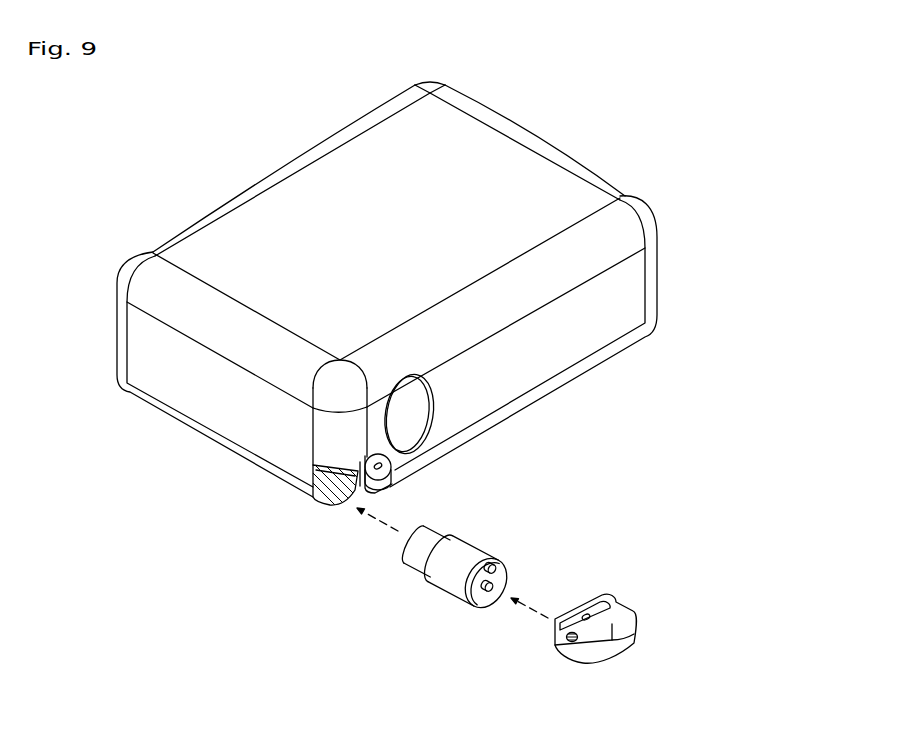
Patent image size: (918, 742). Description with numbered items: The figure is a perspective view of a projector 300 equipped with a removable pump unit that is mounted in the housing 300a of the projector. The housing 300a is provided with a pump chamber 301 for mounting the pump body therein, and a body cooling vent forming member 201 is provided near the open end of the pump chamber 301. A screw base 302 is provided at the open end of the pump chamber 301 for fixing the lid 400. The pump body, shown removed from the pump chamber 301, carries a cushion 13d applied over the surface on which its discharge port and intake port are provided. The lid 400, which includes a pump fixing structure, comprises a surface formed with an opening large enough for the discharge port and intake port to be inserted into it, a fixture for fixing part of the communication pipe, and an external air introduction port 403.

The projector 300 is at (203, 176).
The housing 300a is at (128, 341).
The body cooling vent forming member 201 is at (392, 472).
The screw base 302 is at (366, 492).
The pump chamber 301 is at (328, 502).
The cushion 13d is at (497, 563).
The lid 400 is at (583, 599).
The external air introduction port 403 is at (556, 646).